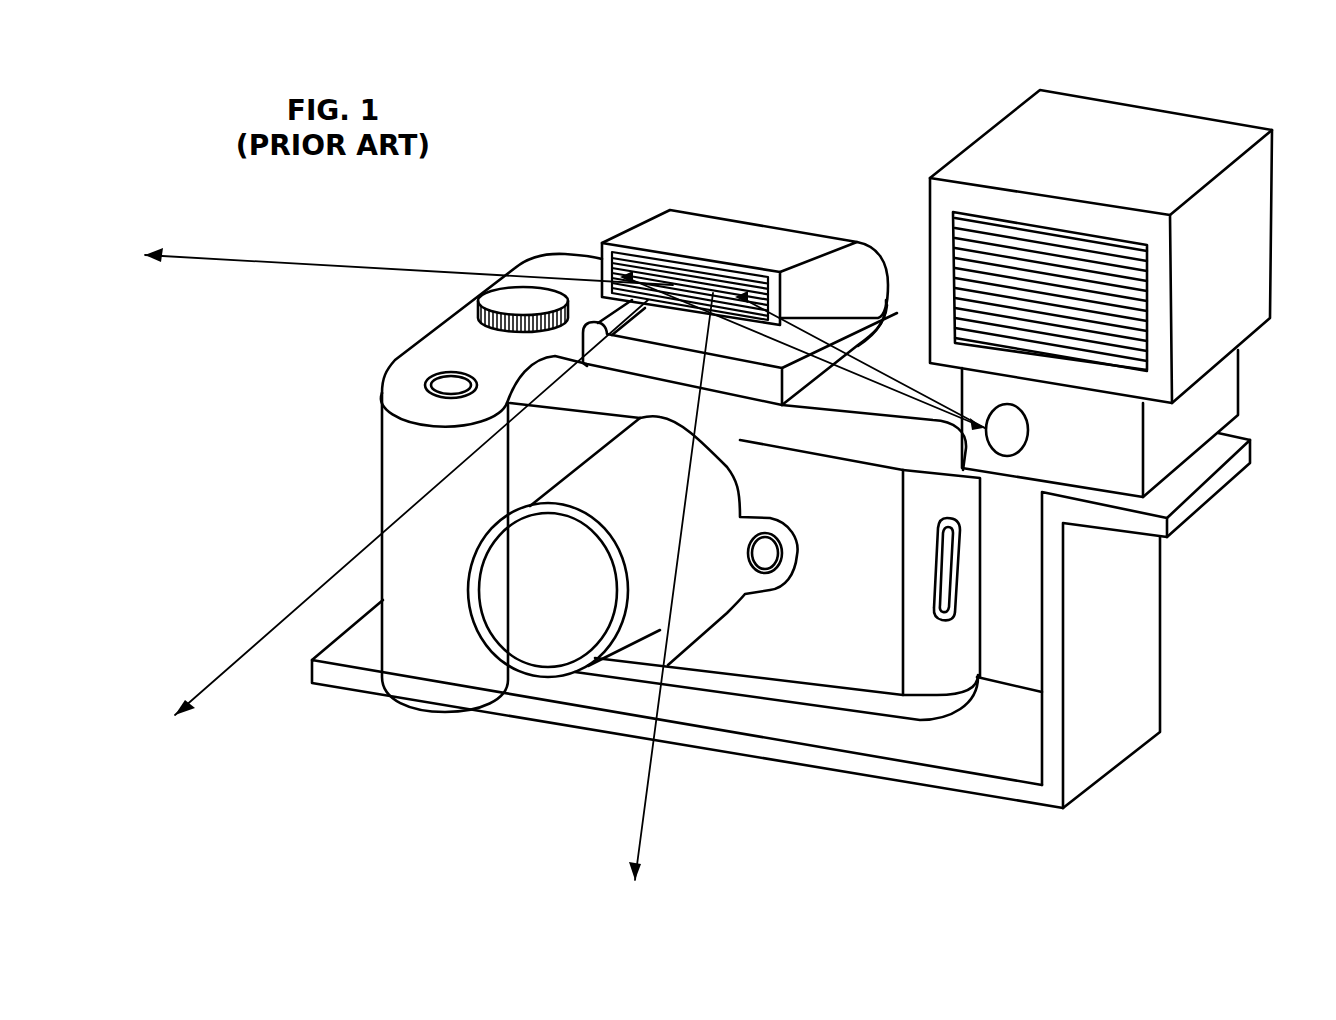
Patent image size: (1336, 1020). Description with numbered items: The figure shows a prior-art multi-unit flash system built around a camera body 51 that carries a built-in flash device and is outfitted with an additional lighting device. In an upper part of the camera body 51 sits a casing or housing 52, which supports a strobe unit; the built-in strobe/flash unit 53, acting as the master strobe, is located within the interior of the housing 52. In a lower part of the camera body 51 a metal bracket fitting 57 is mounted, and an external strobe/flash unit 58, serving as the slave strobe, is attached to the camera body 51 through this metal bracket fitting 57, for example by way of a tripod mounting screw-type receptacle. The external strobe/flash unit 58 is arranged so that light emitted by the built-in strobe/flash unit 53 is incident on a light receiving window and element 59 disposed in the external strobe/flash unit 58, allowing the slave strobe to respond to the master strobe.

The camera body 51 is at (780, 655).
The housing 52 is at (778, 245).
The built-in strobe/flash unit 53 is at (663, 272).
The metal bracket fitting 57 is at (925, 773).
The external strobe/flash unit 58 is at (1055, 272).
The light receiving window and element 59 is at (1000, 433).